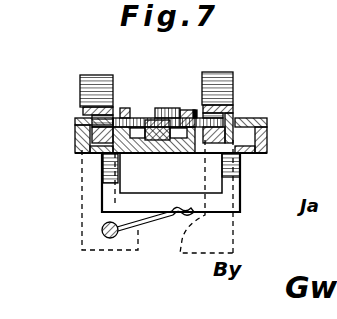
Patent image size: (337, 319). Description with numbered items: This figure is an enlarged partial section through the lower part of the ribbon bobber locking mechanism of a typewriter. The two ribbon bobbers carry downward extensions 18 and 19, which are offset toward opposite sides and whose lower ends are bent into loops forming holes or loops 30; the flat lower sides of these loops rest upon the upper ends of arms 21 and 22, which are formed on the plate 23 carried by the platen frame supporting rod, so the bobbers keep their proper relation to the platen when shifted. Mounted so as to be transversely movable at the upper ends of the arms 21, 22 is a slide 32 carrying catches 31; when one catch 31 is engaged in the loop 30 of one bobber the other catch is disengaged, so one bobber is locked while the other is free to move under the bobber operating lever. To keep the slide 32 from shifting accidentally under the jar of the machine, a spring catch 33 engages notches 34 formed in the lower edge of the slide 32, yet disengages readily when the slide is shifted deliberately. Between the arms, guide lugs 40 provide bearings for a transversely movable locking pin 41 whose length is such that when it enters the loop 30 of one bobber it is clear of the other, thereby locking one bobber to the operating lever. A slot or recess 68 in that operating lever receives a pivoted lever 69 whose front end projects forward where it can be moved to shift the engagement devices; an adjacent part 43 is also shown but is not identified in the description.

The downward extension 18 is at (83, 85).
The downward extension 19 is at (233, 78).
The holes or loops 30 is at (82, 114).
The catches 31 is at (76, 120).
The arm 21 is at (76, 142).
The arm 22 is at (267, 135).
The guide lugs 40 is at (127, 107).
The locking pin 41 is at (135, 113).
The central block 43 is at (178, 104).
The slide 32 is at (107, 190).
The slot or recess 68 is at (130, 173).
The lever 69 is at (215, 158).
The plate 23 is at (100, 232).
The spring catch 33 is at (163, 228).
The notches 34 is at (183, 207).